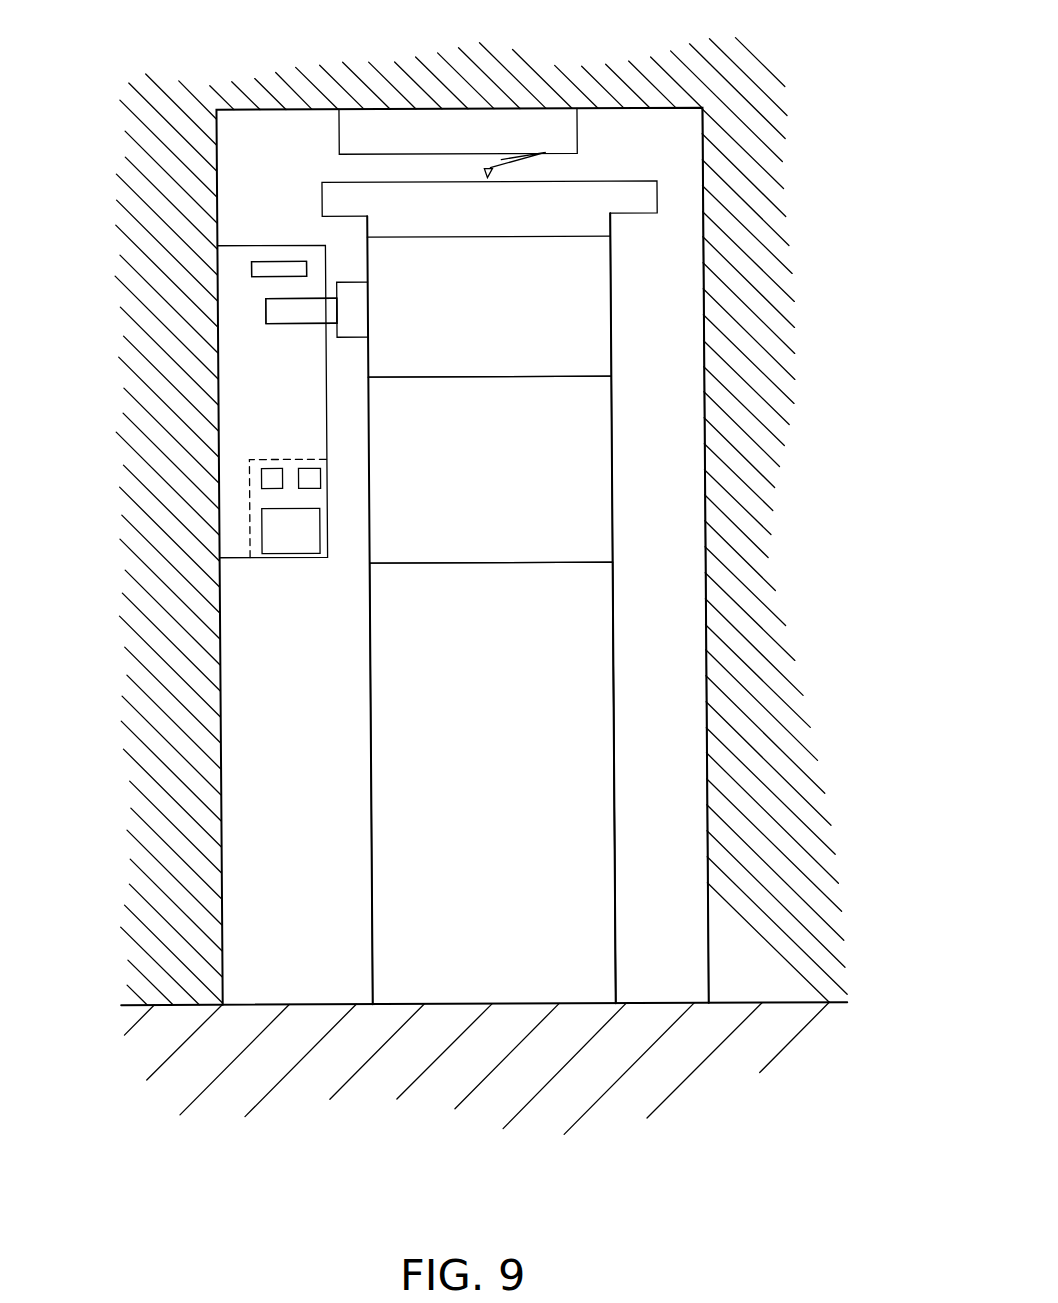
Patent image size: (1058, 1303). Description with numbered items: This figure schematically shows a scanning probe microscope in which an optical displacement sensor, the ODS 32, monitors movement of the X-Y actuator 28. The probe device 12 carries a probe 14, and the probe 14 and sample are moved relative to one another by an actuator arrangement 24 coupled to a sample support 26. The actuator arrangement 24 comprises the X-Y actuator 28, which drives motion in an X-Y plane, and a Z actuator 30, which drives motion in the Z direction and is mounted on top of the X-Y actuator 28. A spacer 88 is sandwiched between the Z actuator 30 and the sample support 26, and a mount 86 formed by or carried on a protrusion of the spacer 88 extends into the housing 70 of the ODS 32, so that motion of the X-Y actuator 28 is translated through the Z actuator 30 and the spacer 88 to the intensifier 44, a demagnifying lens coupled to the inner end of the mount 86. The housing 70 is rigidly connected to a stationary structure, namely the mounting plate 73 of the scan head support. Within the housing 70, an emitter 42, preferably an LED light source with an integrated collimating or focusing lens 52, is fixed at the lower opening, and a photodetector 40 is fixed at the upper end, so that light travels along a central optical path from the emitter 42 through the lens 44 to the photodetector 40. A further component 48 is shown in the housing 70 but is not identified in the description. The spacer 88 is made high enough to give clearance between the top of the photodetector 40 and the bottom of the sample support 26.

The probe device 12 is at (568, 162).
The probe 14 is at (505, 158).
The actuator arrangement 24 is at (618, 533).
The sample support 26 is at (658, 197).
The X-Y actuator 28 is at (573, 777).
The Z actuator 30 is at (600, 472).
The ODS 32 is at (268, 231).
The photodetector 40 is at (262, 260).
The emitter 42 is at (248, 505).
The intensifier 44 is at (266, 310).
The battery 48 is at (267, 542).
The collimating or focusing lens 52 is at (261, 470).
The housing 70 is at (227, 255).
The mounting plate 73 is at (163, 936).
The mount 86 is at (352, 337).
The spacer 88 is at (602, 316).